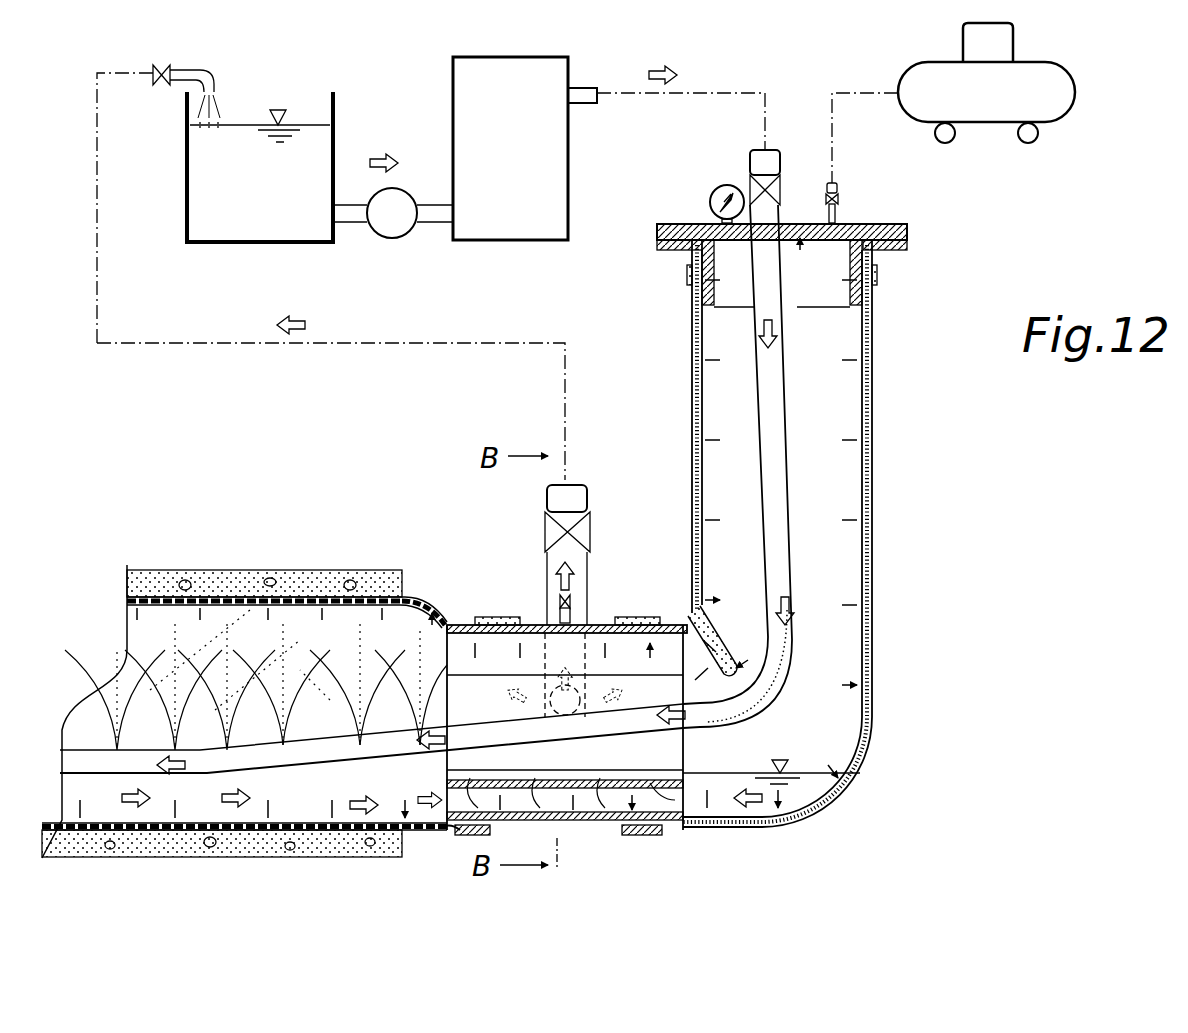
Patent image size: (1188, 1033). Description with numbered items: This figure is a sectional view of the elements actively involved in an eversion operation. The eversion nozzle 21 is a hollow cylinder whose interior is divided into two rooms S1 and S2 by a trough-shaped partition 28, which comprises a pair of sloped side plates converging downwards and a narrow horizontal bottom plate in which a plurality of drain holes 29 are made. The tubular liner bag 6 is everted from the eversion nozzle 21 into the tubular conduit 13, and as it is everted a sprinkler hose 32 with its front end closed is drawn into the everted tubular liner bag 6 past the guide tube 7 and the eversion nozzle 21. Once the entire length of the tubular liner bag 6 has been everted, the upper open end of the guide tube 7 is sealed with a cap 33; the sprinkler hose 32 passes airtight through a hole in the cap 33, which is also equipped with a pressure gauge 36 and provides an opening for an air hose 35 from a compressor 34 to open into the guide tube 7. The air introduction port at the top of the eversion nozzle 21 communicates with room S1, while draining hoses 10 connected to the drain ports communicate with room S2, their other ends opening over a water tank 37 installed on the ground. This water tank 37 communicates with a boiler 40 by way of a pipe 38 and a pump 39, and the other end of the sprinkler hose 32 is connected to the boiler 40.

The tubular liner bag 6 is at (422, 596).
The guide tube 7 is at (876, 570).
The draining hose 10 is at (568, 447).
The tubular conduit 13 is at (236, 572).
The eversion nozzle 21 is at (602, 597).
The partition 28 is at (503, 762).
The drain holes 29 is at (462, 838).
The sprinkler hose 32 is at (788, 486).
The cap 33 is at (876, 226).
The compressor 34 is at (1038, 68).
The air hose 35 is at (835, 160).
The pressure gauge 36 is at (716, 188).
The water tank 37 is at (215, 245).
The pipe 38 is at (428, 208).
The pump 39 is at (380, 236).
The boiler 40 is at (568, 200).
The room S1 is at (690, 755).
The room S2 is at (605, 832).